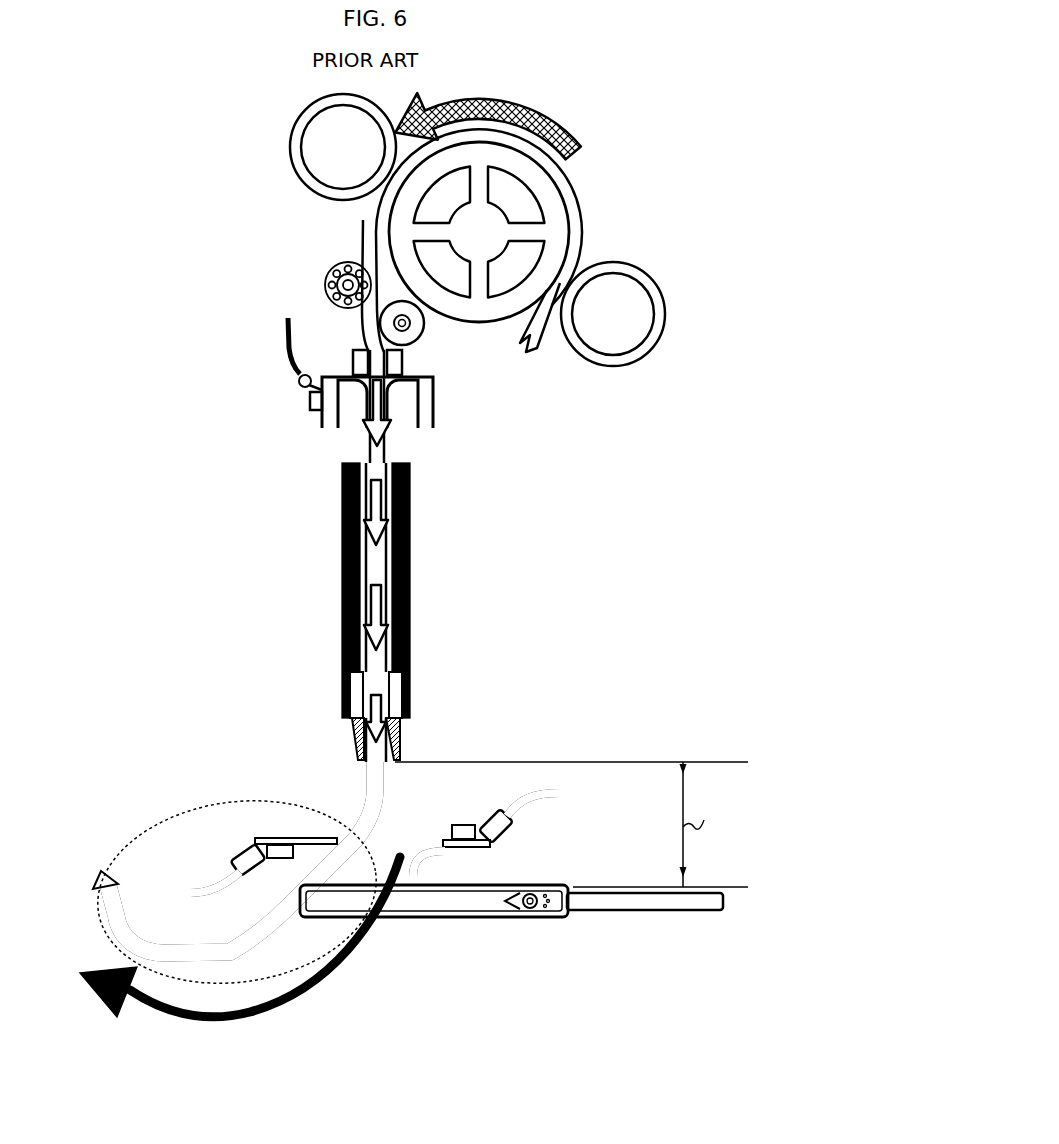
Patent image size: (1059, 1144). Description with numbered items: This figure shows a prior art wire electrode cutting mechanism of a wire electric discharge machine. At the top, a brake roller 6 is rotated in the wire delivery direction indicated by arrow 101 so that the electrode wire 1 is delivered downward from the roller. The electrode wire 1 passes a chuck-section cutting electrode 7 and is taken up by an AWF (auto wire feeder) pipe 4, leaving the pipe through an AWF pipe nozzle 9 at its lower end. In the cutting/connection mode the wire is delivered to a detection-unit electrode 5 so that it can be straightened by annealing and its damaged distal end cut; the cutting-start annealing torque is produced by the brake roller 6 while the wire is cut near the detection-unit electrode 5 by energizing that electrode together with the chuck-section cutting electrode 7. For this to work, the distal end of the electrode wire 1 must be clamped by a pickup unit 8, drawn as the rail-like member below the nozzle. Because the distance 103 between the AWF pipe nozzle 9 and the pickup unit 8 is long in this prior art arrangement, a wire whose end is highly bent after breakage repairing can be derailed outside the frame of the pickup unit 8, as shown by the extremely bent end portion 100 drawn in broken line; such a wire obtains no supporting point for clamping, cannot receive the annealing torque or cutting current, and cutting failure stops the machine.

The electrode wire 1 is at (366, 776).
The AWF (auto wire feeder) pipe 4 is at (340, 556).
The detection-unit electrode 5 is at (256, 845).
The brake roller 6 is at (557, 222).
The chuck-section cutting electrode 7 is at (328, 374).
The pickup unit 8 is at (448, 921).
The AWF pipe nozzle 9 is at (406, 738).
The extremely bent end portion 100 is at (298, 952).
The arrow indicating wire delivery direction 101 is at (548, 114).
The distance between the AWF pipe nozzle and the pickup unit 103 is at (571, 824).